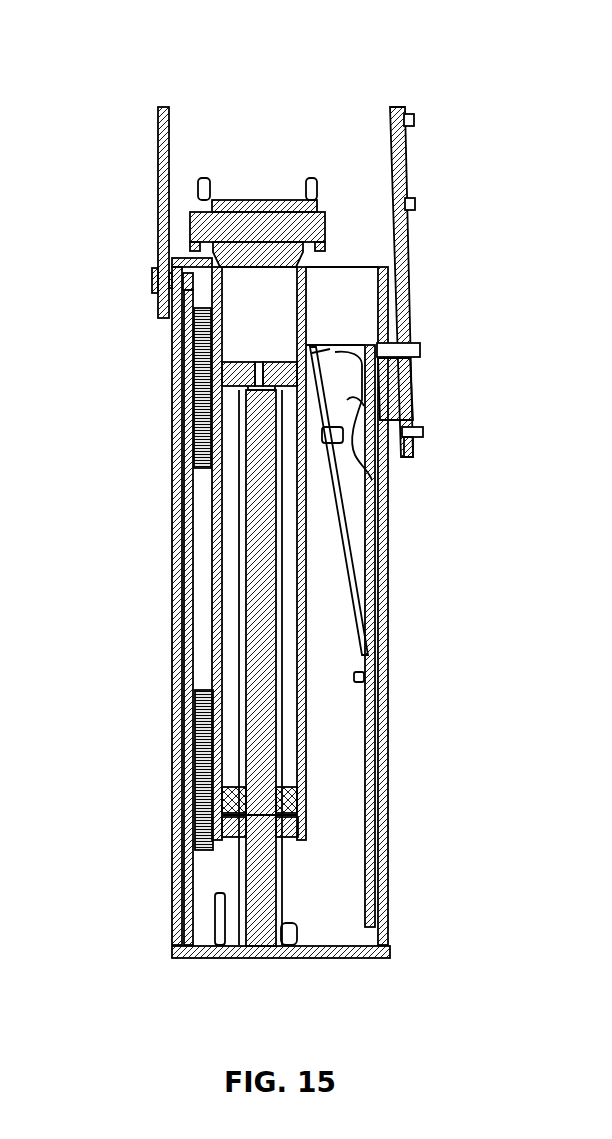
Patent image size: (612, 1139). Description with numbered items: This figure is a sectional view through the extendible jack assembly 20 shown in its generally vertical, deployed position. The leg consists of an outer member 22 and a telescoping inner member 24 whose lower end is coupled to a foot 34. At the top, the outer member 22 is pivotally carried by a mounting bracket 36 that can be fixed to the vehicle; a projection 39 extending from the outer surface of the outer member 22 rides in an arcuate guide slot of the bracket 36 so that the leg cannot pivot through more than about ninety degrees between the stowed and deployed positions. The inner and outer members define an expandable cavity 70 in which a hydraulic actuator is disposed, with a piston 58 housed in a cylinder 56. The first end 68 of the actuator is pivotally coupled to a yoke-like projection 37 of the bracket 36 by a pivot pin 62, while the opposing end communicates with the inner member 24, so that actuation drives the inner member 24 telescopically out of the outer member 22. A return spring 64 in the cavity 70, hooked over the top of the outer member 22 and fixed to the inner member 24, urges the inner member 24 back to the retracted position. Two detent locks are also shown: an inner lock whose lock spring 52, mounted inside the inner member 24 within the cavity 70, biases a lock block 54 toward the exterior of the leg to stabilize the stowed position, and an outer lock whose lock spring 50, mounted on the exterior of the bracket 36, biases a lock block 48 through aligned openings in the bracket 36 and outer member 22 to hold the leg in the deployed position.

The jack assembly 20 is at (103, 57).
The outer member 22 is at (386, 585).
The inner member 24 is at (372, 656).
The foot 34 is at (343, 951).
The mounting bracket 36 is at (169, 131).
The yoke-like projection 37 is at (312, 190).
The projection 39 is at (152, 280).
The lock block 48 is at (395, 400).
The lock spring 50 is at (410, 358).
The lock spring 52 is at (345, 535).
The lock block 54 is at (375, 483).
The cylinder 56 is at (308, 727).
The piston 58 is at (261, 936).
The pivot pin 62 is at (325, 224).
The return spring 64 is at (190, 403).
The first end of the actuator 68 is at (240, 206).
The expandable cavity 70 is at (343, 867).